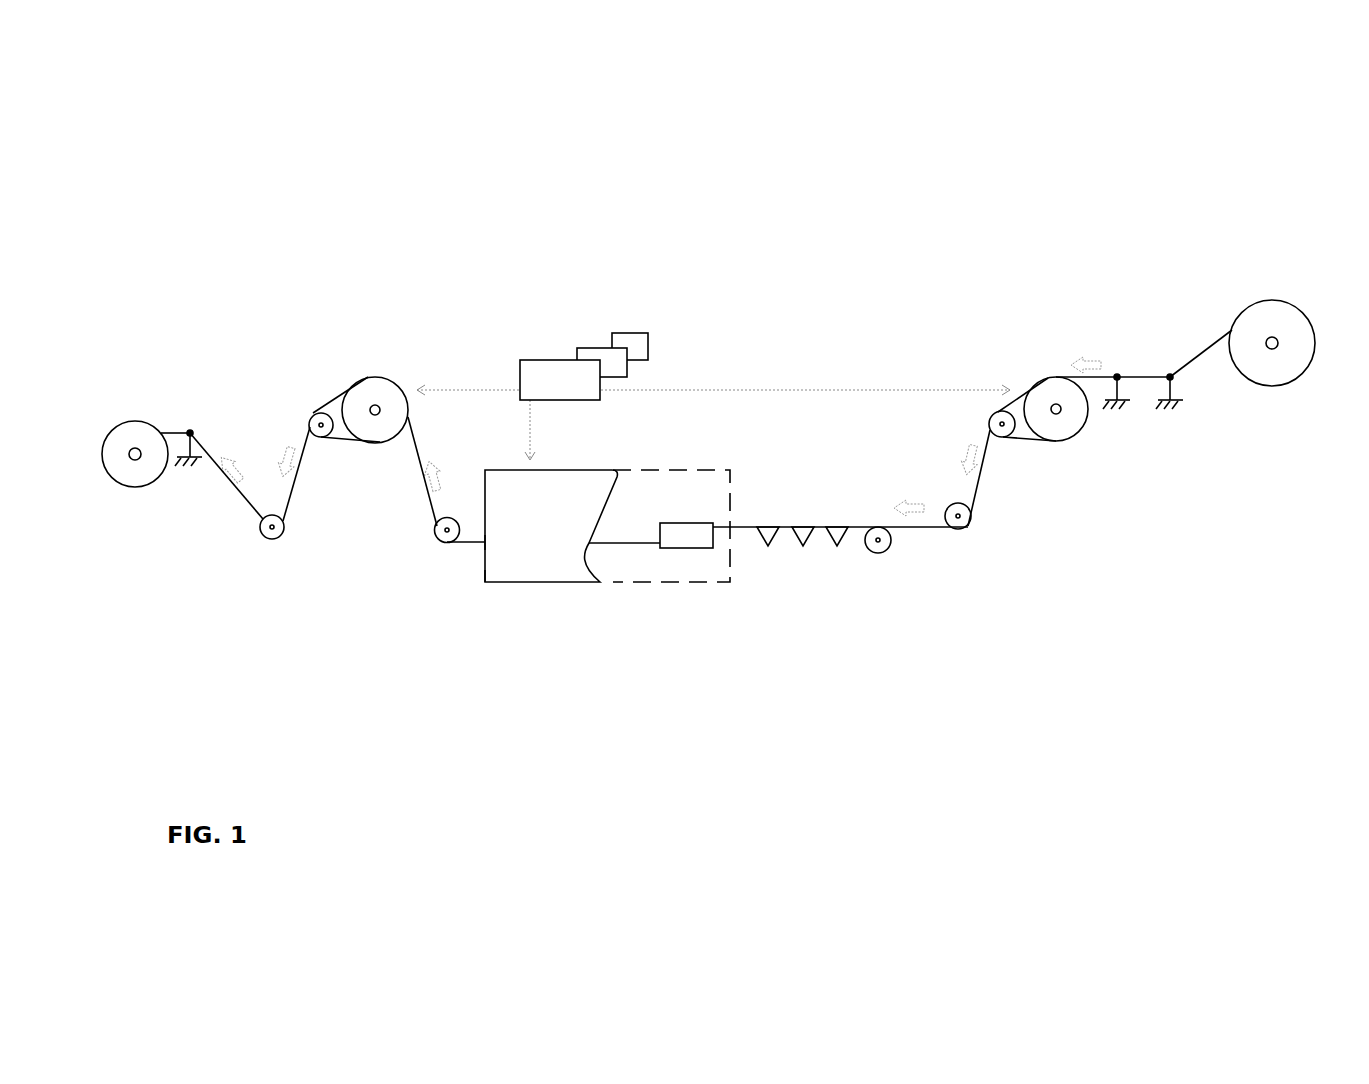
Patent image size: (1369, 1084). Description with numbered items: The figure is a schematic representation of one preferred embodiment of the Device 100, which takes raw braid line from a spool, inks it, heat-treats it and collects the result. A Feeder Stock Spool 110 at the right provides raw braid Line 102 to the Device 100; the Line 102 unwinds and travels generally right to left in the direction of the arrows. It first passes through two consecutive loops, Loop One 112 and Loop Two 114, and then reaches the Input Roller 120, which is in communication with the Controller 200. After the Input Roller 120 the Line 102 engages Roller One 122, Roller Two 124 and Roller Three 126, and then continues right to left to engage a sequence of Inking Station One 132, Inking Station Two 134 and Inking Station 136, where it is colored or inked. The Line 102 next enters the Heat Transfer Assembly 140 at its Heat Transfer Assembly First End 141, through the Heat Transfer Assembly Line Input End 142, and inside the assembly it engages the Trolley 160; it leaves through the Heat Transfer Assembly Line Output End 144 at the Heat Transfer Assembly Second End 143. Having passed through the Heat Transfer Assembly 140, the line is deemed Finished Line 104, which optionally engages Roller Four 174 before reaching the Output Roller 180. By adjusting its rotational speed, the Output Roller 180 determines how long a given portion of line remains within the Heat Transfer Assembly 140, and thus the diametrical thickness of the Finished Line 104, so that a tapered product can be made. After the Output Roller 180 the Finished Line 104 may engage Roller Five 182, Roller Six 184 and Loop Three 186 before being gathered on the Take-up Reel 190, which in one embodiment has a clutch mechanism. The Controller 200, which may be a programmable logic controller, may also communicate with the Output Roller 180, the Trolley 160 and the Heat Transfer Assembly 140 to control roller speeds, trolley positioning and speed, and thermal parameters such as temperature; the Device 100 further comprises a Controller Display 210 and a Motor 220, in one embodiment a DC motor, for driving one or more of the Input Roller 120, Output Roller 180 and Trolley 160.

The Device 100 is at (313, 235).
The Line 102 is at (1193, 360).
The Finished Line 104 is at (227, 485).
The Feeder Stock Spool 110 is at (1273, 288).
The Loop One 112 is at (1170, 367).
The Loop Two 114 is at (1120, 367).
The Input Roller 120 is at (1092, 427).
The Roller One 122 is at (1003, 442).
The Roller Two 124 is at (973, 528).
The Roller Three 126 is at (890, 555).
The Inking Station One 132 is at (840, 552).
The Inking Station Two 134 is at (803, 552).
The Inking Station 136 is at (768, 553).
The Heat Transfer Assembly 140 is at (687, 590).
The Heat Transfer Assembly First End 141 is at (740, 487).
The Heat Transfer Assembly Line Input End 142 is at (738, 518).
The Heat Transfer Assembly Second End 143 is at (480, 577).
The Heat Transfer Assembly Line Output End 144 is at (480, 545).
The Trolley 160 is at (672, 553).
The Roller Four 174 is at (430, 543).
The Output Roller 180 is at (360, 368).
The Roller Five 182 is at (322, 447).
The Roller Six 184 is at (260, 540).
The Loop Three 186 is at (197, 423).
The Take-up Reel 190 is at (147, 415).
The Controller 200 is at (542, 350).
The Controller Display 210 is at (595, 337).
The Motor 220 is at (630, 327).